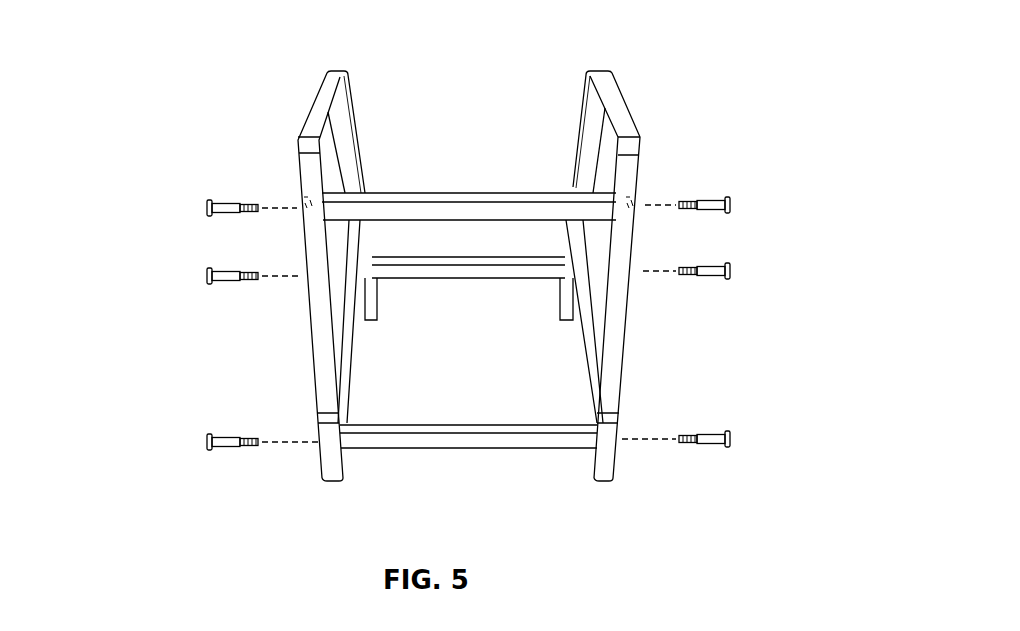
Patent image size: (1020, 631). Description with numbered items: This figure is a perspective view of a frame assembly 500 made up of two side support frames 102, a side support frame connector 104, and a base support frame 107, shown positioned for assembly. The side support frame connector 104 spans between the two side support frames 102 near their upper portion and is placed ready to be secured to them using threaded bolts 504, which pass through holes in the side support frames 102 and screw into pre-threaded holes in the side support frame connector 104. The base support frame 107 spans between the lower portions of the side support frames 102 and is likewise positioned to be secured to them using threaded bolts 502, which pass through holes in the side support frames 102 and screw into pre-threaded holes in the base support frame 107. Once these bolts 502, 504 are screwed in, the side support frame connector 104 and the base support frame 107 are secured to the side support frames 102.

The frame assembly 500 is at (163, 45).
The side support frame 102 is at (332, 77).
The side support frame connector 104 is at (457, 193).
The base support frame 107 is at (447, 440).
The bolt 502 is at (207, 276).
The threaded bolt 504 is at (207, 208).